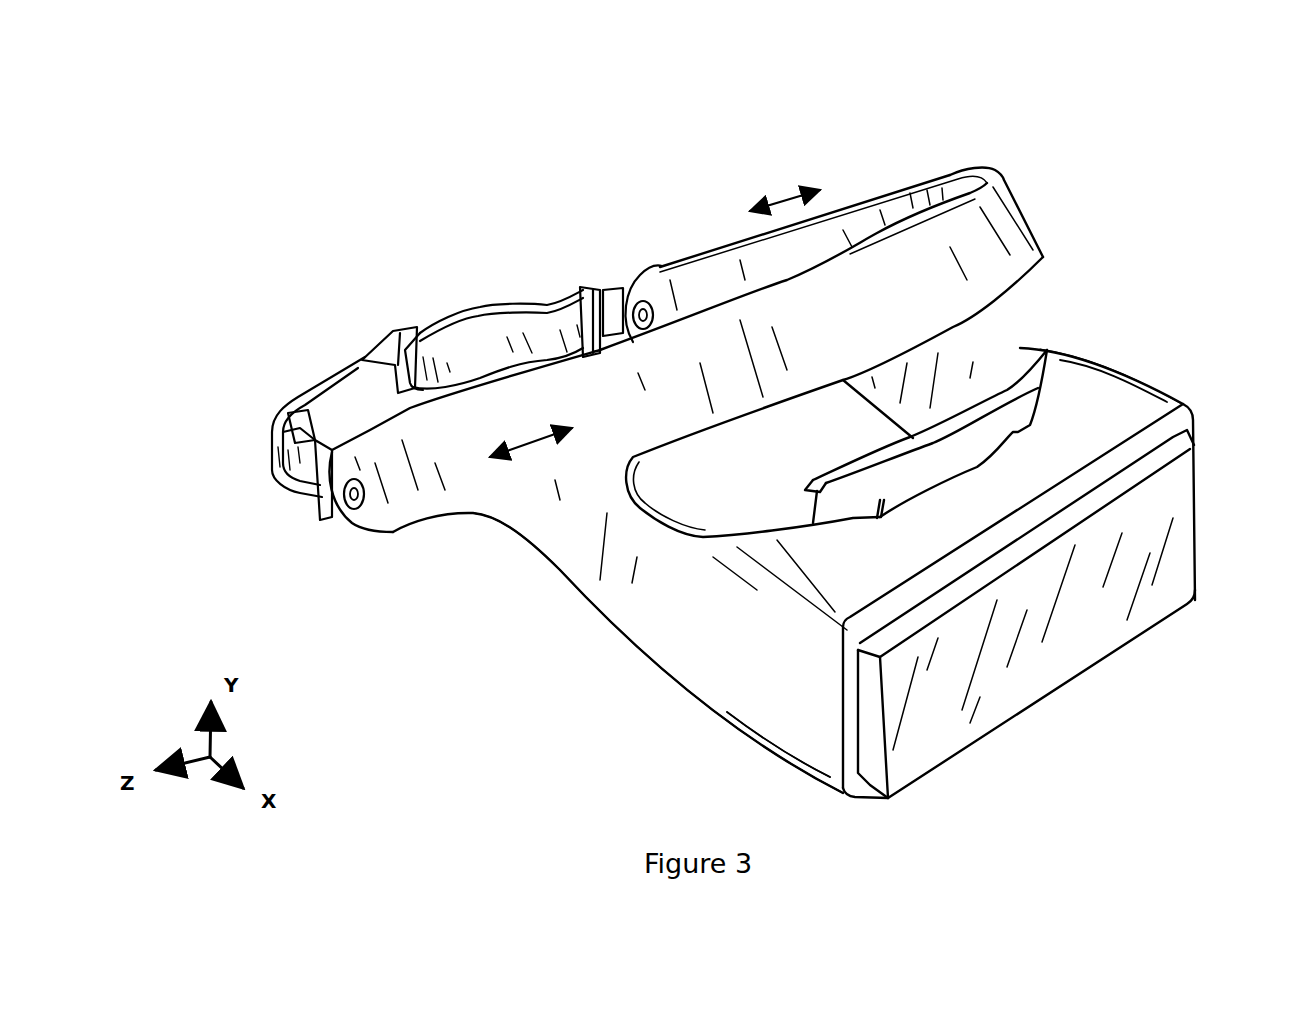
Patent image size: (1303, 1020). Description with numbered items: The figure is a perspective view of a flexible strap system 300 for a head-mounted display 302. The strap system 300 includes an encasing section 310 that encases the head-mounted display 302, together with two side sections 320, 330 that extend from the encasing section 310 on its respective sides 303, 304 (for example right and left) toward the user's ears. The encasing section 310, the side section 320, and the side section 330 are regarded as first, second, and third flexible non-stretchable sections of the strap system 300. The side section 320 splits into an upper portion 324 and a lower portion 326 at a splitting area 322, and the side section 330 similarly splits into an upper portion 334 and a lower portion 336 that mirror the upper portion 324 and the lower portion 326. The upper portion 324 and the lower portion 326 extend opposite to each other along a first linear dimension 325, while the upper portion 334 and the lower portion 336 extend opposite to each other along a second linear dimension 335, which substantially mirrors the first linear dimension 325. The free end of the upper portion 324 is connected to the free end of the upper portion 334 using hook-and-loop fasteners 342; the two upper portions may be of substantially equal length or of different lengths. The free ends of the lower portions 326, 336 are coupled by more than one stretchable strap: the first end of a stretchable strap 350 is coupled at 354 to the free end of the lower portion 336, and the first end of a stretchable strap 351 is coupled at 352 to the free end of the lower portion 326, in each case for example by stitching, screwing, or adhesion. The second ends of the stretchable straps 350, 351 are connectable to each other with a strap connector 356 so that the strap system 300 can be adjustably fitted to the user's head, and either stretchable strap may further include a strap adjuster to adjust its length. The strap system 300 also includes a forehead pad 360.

The flexible strap system 300 is at (254, 132).
The head-mounted display 302 is at (1188, 517).
The side 303 is at (708, 665).
The side 304 is at (1086, 344).
The encasing section 310 is at (1137, 375).
The side section 320 is at (587, 592).
The splitting area 322 is at (537, 478).
The upper portion 324 is at (700, 307).
The first linear dimension 325 is at (557, 433).
The lower portion 326 is at (397, 522).
The side section 330 is at (987, 345).
The upper portion 334 is at (903, 212).
The second linear dimension 335 is at (785, 186).
The lower portion 336 is at (720, 267).
The hook-and-loop fasteners 342 is at (990, 160).
The stretchable strap 350 is at (479, 303).
The stretchable strap 351 is at (338, 380).
The coupling 352 is at (340, 531).
The coupling 354 is at (628, 280).
The strap connector 356 is at (392, 338).
The forehead pad 360 is at (1050, 340).